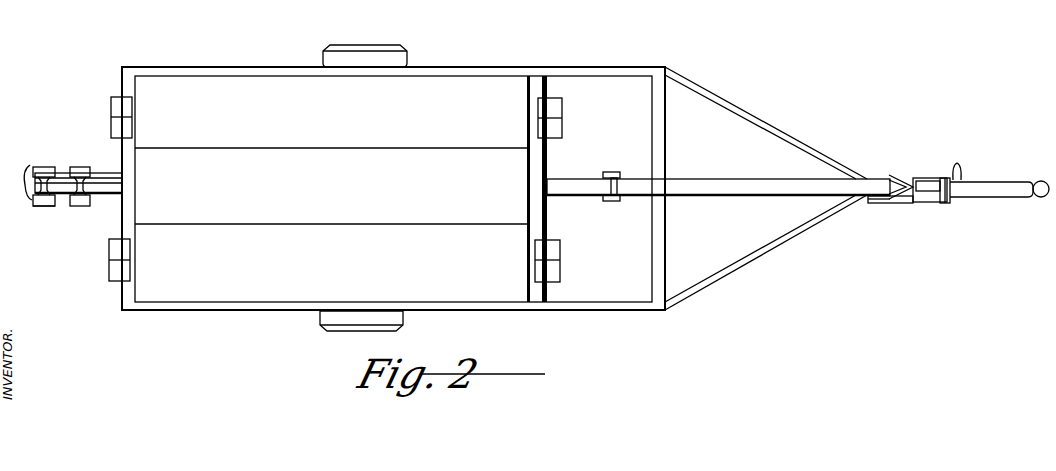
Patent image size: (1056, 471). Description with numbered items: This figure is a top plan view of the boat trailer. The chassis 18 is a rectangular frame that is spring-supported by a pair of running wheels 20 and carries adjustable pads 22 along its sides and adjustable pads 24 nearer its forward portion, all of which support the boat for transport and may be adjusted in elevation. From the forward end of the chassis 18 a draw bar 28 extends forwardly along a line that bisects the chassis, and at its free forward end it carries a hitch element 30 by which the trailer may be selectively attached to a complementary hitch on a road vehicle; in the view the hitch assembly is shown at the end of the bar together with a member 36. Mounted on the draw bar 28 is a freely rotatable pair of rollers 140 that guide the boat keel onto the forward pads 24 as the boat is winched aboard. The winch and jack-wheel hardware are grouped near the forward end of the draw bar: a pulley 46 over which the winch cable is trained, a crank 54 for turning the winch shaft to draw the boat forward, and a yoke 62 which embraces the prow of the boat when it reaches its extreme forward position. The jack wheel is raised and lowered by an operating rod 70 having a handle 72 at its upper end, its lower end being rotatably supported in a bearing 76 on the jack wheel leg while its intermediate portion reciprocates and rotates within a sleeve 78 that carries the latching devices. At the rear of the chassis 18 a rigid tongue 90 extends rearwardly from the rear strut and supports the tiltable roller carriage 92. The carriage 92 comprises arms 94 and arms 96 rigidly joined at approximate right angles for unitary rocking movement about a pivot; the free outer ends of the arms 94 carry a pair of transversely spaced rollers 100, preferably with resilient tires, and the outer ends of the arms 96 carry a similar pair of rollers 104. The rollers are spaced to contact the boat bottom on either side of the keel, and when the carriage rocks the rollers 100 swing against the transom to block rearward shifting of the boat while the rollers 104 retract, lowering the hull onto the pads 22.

The chassis 18 is at (623, 313).
The running wheels 20 is at (406, 53).
The adjustable pads 22 is at (117, 97).
The adjustable pads 24 is at (556, 107).
The draw bar 28 is at (744, 181).
The hitch element 30 is at (1037, 198).
The hitch bar 36 is at (967, 180).
The pulley 46 is at (932, 181).
The crank 54 is at (958, 166).
The yoke 62 is at (893, 175).
The operating rod 70 is at (922, 203).
The handle 72 is at (872, 200).
The bearing 76 is at (945, 203).
The sleeve 78 is at (908, 203).
The rigid tongue 90 is at (68, 188).
The roller carriage 92 is at (66, 176).
The arms 94 is at (55, 203).
The arms 96 is at (89, 195).
The rollers 100 is at (30, 166).
The rollers 104 is at (78, 167).
The rollers 140 is at (612, 172).